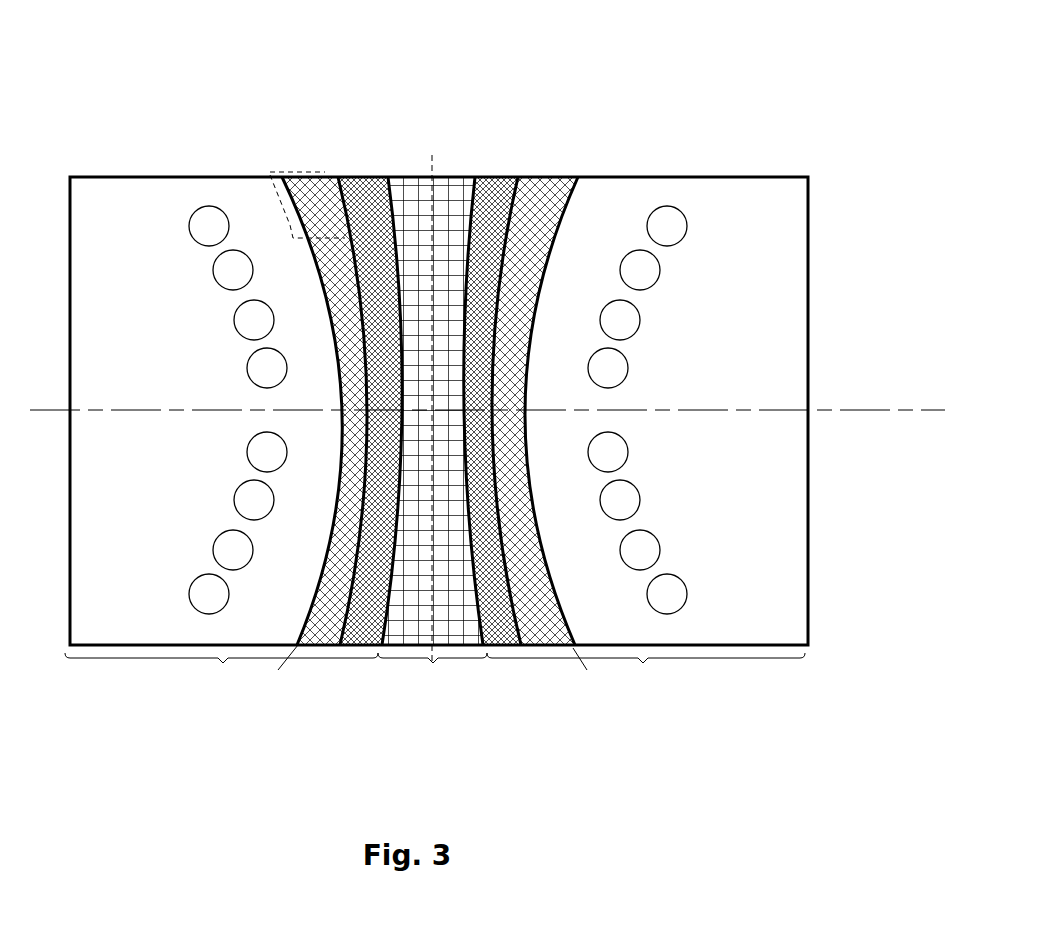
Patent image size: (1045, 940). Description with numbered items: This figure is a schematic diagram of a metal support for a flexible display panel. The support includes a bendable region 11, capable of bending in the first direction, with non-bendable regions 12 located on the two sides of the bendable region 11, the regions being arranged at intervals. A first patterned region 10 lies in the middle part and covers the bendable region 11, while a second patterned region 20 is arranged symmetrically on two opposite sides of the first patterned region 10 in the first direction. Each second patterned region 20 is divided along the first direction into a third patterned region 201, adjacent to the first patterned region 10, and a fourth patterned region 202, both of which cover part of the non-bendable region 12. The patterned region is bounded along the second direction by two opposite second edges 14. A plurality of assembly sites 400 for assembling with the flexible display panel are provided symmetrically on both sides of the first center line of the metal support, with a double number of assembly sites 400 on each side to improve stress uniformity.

The first patterned region 10 is at (415, 200).
The bendable region 11 is at (446, 660).
The non-bendable region 12 is at (680, 662).
The second edge 14 is at (388, 175).
The second patterned region 20 is at (463, 323).
The third patterned region 201 is at (362, 205).
The fourth patterned region 202 is at (313, 205).
The assembly site 400 is at (187, 220).